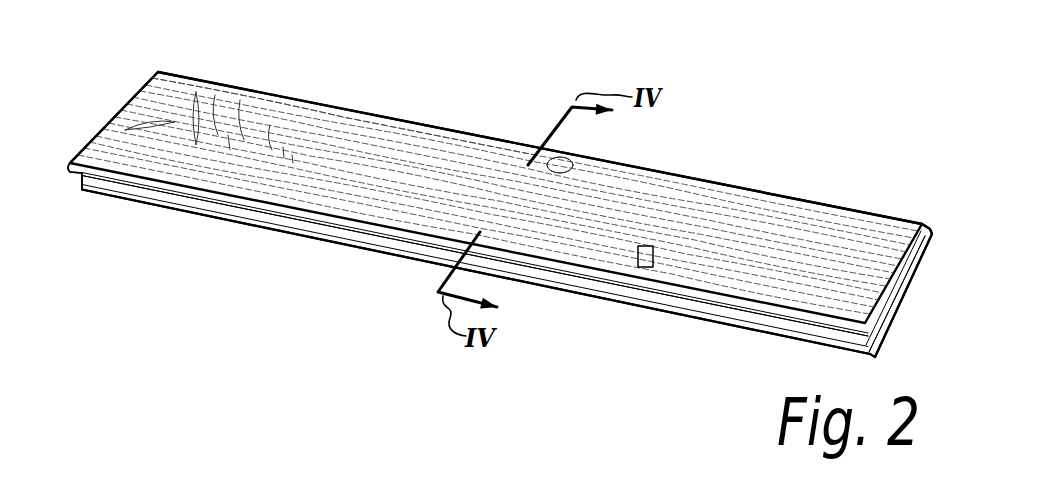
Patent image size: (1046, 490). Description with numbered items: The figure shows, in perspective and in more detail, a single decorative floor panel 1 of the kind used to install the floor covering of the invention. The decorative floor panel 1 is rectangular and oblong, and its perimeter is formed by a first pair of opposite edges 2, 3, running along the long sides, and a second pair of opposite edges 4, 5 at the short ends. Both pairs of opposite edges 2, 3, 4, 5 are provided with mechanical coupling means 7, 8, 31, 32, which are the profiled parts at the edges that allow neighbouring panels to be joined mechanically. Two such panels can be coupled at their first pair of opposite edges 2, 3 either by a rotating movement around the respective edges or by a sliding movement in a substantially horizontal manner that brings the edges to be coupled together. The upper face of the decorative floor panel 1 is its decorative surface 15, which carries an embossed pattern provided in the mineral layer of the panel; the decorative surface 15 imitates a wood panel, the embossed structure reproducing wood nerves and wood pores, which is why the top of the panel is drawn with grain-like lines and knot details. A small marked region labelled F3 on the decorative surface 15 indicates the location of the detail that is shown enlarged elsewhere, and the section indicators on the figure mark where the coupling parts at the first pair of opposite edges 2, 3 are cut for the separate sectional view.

The decorative floor panel 1 is at (785, 181).
The first edge of first pair of opposite edges 2 is at (690, 176).
The second edge of first pair of opposite edges 3 is at (737, 320).
The first edge of second pair of opposite edges 4 is at (130, 97).
The second edge of second pair of opposite edges 5 is at (903, 282).
The mechanical coupling means 7 is at (473, 132).
The mechanical coupling means 8 is at (295, 219).
The decorative surface 15 is at (348, 128).
The mechanical coupling means 31 is at (68, 170).
The mechanical coupling means 32 is at (885, 316).
The detail location of figure 3 F3 is at (637, 255).